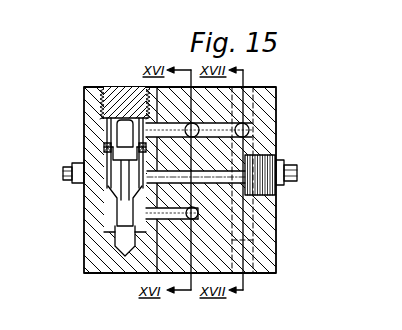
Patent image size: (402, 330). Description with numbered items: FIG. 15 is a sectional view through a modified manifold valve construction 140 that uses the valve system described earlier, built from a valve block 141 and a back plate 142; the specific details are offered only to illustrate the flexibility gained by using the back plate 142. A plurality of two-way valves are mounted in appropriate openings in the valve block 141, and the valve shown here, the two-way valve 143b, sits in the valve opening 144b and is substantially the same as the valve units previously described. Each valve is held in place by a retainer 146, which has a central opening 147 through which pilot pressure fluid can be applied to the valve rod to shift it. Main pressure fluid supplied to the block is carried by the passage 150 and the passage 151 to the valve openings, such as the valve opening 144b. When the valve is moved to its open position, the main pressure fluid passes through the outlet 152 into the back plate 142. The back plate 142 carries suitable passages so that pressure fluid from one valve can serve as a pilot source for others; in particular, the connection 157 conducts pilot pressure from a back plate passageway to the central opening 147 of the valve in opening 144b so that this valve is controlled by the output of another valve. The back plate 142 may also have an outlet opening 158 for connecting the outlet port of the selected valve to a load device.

The manifold valve construction 140 is at (139, 52).
The valve block 141 is at (86, 87).
The back plate 142 is at (275, 112).
The retainer 146 is at (124, 87).
The central opening 147 is at (123, 128).
The two-way valve 143b is at (94, 146).
The valve opening 144b is at (110, 228).
The connection 157 is at (190, 123).
The passage 150 is at (198, 213).
The passage 151 is at (178, 221).
The outlet 152 is at (226, 173).
The outlet opening 158 is at (241, 178).